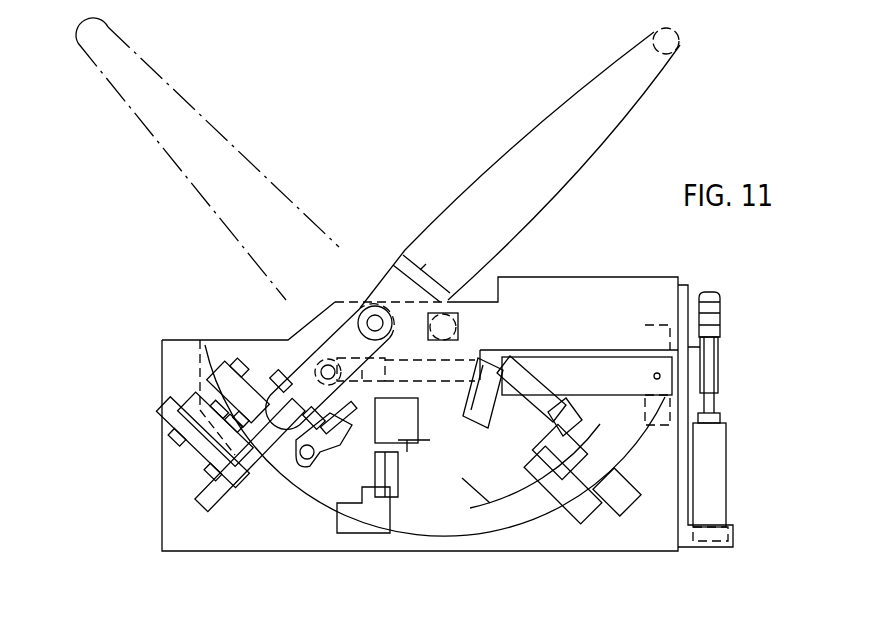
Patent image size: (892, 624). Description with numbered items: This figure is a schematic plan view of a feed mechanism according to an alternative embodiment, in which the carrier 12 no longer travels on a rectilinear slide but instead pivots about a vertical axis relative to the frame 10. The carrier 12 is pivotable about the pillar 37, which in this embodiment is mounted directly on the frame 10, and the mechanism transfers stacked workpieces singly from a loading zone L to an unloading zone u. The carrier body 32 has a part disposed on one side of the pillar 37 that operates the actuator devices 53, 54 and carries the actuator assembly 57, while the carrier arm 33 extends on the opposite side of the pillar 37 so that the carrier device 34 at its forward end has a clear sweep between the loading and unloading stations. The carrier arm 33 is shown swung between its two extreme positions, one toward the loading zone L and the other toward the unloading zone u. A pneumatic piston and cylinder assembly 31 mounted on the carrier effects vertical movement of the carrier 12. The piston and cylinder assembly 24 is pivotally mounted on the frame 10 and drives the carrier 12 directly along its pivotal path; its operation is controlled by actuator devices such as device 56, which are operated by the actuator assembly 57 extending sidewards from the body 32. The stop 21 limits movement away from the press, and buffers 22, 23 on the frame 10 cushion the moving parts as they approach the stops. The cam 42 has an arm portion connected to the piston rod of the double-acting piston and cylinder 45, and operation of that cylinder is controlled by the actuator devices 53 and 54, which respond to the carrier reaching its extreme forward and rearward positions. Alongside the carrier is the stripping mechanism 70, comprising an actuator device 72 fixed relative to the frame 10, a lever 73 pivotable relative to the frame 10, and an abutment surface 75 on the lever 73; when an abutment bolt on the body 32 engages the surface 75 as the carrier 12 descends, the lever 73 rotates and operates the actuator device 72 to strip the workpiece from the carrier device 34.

The frame 10 is at (515, 533).
The carrier 12 is at (374, 288).
The stop 21 is at (213, 380).
The buffer 22 is at (573, 450).
The buffer 23 is at (168, 443).
The piston and cylinder assembly 24 is at (600, 370).
The pneumatic piston and cylinder assembly 31 is at (465, 325).
The carrier body 32 is at (337, 350).
The carrier arm 33 is at (500, 220).
The carrier device 34 is at (682, 34).
The pillar 37 is at (362, 302).
The cam 42 is at (718, 360).
The double-acting piston and cylinder 45 is at (712, 460).
The actuator device 53 is at (617, 492).
The actuator device 54 is at (245, 400).
The actuator device 56 is at (350, 522).
The actuator assembly 57 is at (402, 472).
The stripping mechanism 70 is at (522, 428).
The actuator device 72 is at (567, 417).
The lever 73 is at (512, 395).
The abutment surface 75 is at (498, 412).
The loading zone L is at (688, 51).
The unloading zone u is at (88, 64).